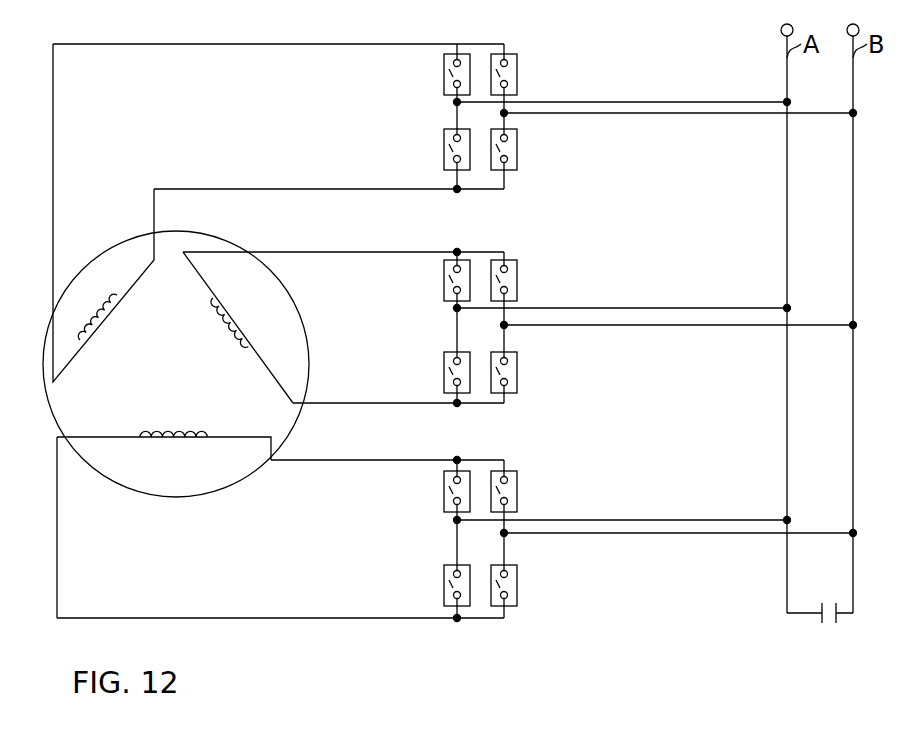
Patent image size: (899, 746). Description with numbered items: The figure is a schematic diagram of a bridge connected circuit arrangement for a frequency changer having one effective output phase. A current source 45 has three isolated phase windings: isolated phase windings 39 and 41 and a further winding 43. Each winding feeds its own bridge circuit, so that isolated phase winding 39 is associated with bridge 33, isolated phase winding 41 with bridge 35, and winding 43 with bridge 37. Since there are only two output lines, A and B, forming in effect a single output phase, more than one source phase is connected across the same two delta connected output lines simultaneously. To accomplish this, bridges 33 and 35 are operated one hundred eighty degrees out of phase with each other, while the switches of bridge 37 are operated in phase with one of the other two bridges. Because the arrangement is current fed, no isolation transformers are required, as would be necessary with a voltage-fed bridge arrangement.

The bridge 33 is at (560, 93).
The bridge 35 is at (572, 298).
The bridge 37 is at (572, 508).
The isolated phase winding 39 is at (90, 320).
The isolated phase winding 41 is at (270, 302).
The winding 43 is at (168, 442).
The current source 45 is at (116, 248).